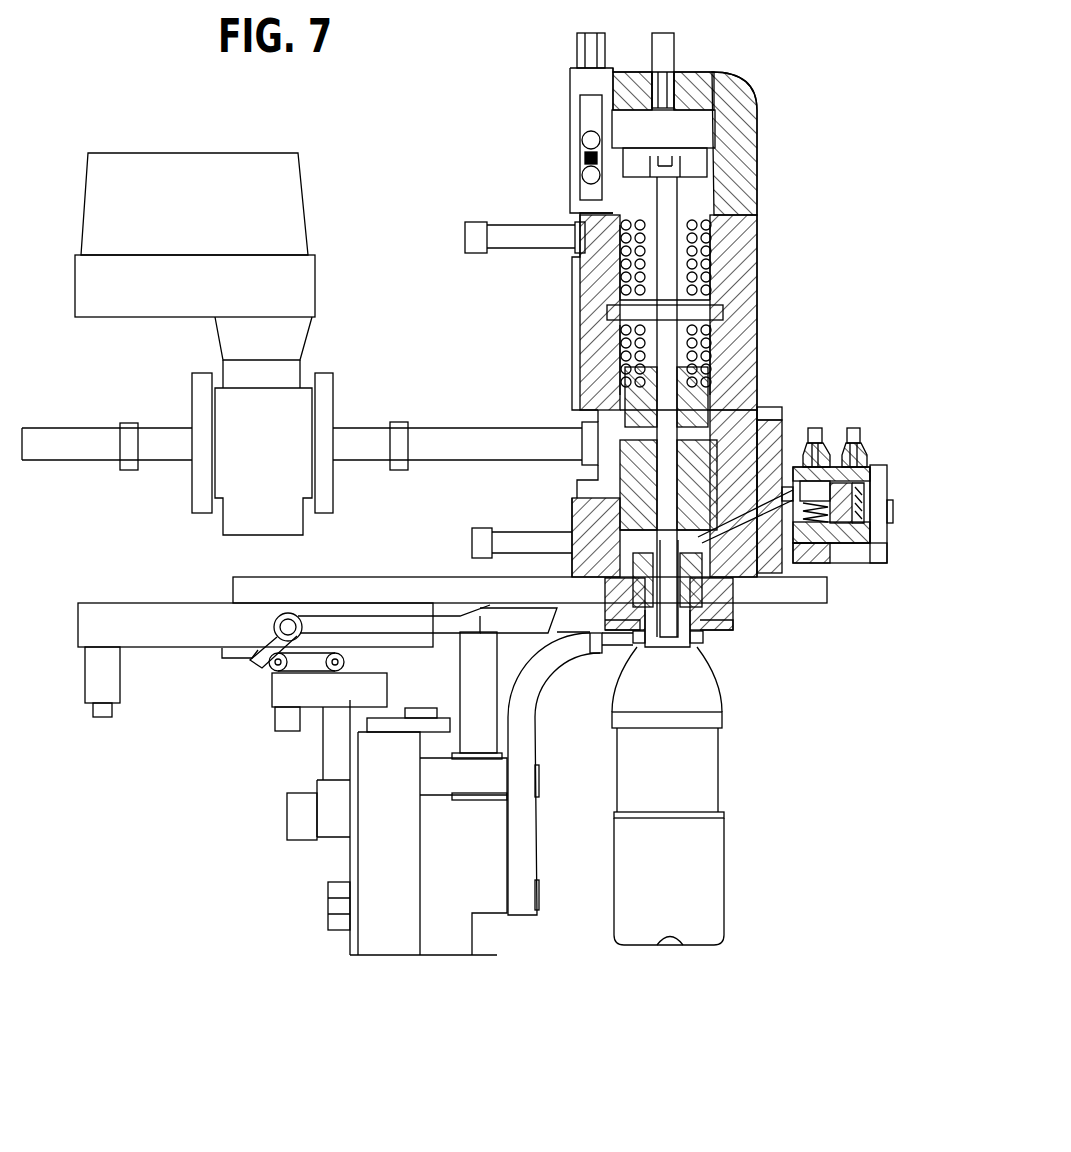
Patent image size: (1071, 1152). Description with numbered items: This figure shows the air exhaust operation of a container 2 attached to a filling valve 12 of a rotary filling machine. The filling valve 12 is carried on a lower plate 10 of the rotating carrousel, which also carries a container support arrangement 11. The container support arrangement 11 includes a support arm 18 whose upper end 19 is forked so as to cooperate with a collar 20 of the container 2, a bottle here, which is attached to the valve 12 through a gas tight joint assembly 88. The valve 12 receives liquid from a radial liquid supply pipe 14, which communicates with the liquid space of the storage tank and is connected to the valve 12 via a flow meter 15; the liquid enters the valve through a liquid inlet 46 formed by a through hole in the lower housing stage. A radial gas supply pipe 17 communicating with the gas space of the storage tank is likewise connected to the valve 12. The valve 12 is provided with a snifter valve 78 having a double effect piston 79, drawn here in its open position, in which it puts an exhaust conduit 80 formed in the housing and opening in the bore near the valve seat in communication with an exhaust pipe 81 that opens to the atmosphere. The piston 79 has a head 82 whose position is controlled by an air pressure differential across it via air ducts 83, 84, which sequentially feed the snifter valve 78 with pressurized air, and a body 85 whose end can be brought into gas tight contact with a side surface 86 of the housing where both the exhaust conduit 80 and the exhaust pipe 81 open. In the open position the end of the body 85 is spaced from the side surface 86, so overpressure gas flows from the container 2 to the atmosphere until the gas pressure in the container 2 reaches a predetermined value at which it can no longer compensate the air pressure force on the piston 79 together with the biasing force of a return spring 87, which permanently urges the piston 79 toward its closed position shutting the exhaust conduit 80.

The container 2 is at (715, 777).
The lower plate 10 is at (400, 590).
The container support arrangement 11 is at (534, 922).
The filling valve 12 is at (772, 160).
The liquid supply pipe 14 is at (450, 435).
The flow meter 15 is at (305, 195).
The gas supply pipe 17 is at (502, 230).
The support arm 18 is at (525, 830).
The upper end 19 is at (623, 638).
The collar 20 is at (703, 647).
The liquid inlet 46 is at (607, 443).
The snifter valve 78 is at (886, 449).
The double effect piston 79 is at (818, 520).
The exhaust conduit 80 is at (752, 500).
The exhaust pipe 81 is at (742, 577).
The head 82 is at (850, 533).
The air duct 83 is at (812, 428).
The air duct 84 is at (853, 440).
The body 85 is at (812, 530).
The side surface 86 is at (792, 467).
The return spring 87 is at (837, 522).
The gas tight joint assembly 88 is at (705, 634).